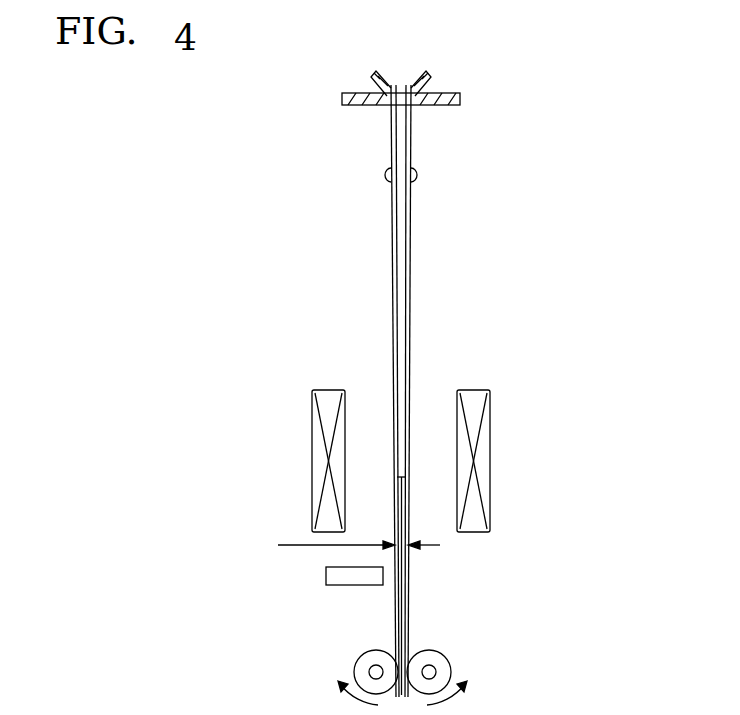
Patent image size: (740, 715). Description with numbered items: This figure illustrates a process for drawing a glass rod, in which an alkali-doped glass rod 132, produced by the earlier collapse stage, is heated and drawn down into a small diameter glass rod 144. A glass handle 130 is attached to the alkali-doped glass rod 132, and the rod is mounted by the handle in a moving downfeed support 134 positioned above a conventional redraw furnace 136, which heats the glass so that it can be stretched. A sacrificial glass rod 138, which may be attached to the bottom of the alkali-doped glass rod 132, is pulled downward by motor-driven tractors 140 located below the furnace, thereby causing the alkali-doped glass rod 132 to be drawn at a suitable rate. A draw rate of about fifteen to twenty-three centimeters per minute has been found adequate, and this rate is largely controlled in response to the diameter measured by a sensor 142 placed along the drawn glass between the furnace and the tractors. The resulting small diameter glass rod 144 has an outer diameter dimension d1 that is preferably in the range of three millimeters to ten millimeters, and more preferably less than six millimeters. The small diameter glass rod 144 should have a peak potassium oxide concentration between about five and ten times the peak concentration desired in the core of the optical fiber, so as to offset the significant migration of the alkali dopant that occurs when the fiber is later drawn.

The glass handle 130 is at (412, 118).
The alkali-doped glass rod 132 is at (410, 240).
The moving downfeed support 134 is at (443, 98).
The redraw furnace 136 is at (490, 430).
The sacrificial glass rod 138 is at (408, 640).
The motor-driven tractors 140 is at (354, 663).
The sensor 142 is at (326, 574).
The small diameter glass rod 144 is at (408, 576).
The outer diameter dimension d1 is at (295, 545).